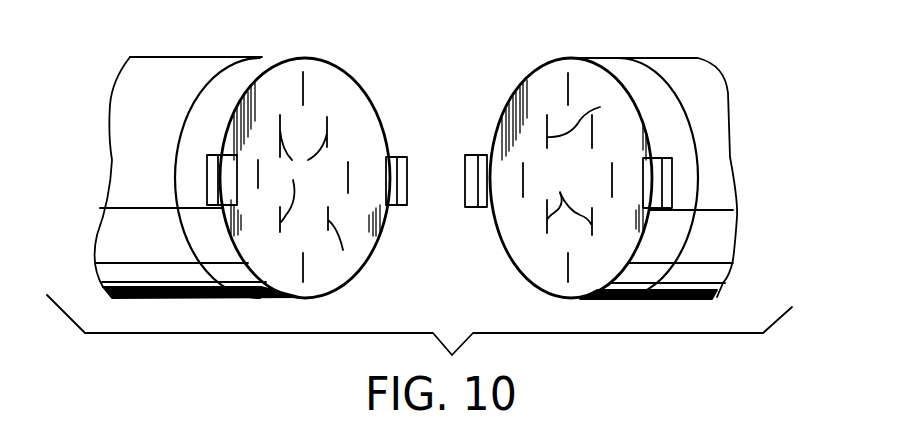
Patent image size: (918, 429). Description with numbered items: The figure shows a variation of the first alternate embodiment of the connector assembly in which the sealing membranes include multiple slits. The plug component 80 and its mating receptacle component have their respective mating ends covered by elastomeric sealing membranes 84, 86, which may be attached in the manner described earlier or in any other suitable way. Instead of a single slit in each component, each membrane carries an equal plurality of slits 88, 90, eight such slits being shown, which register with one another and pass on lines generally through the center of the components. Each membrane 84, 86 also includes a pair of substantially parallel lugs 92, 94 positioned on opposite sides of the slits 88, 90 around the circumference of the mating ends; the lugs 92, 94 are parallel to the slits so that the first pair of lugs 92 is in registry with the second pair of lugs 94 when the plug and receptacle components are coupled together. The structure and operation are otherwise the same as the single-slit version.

The plug component 80 is at (156, 68).
The elastomeric sealing membrane 84 is at (340, 83).
The elastomeric sealing membrane 86 is at (555, 73).
The slits 88 is at (303, 80).
The slits 90 is at (568, 93).
The lugs 92 is at (215, 206).
The lugs 94 is at (470, 207).